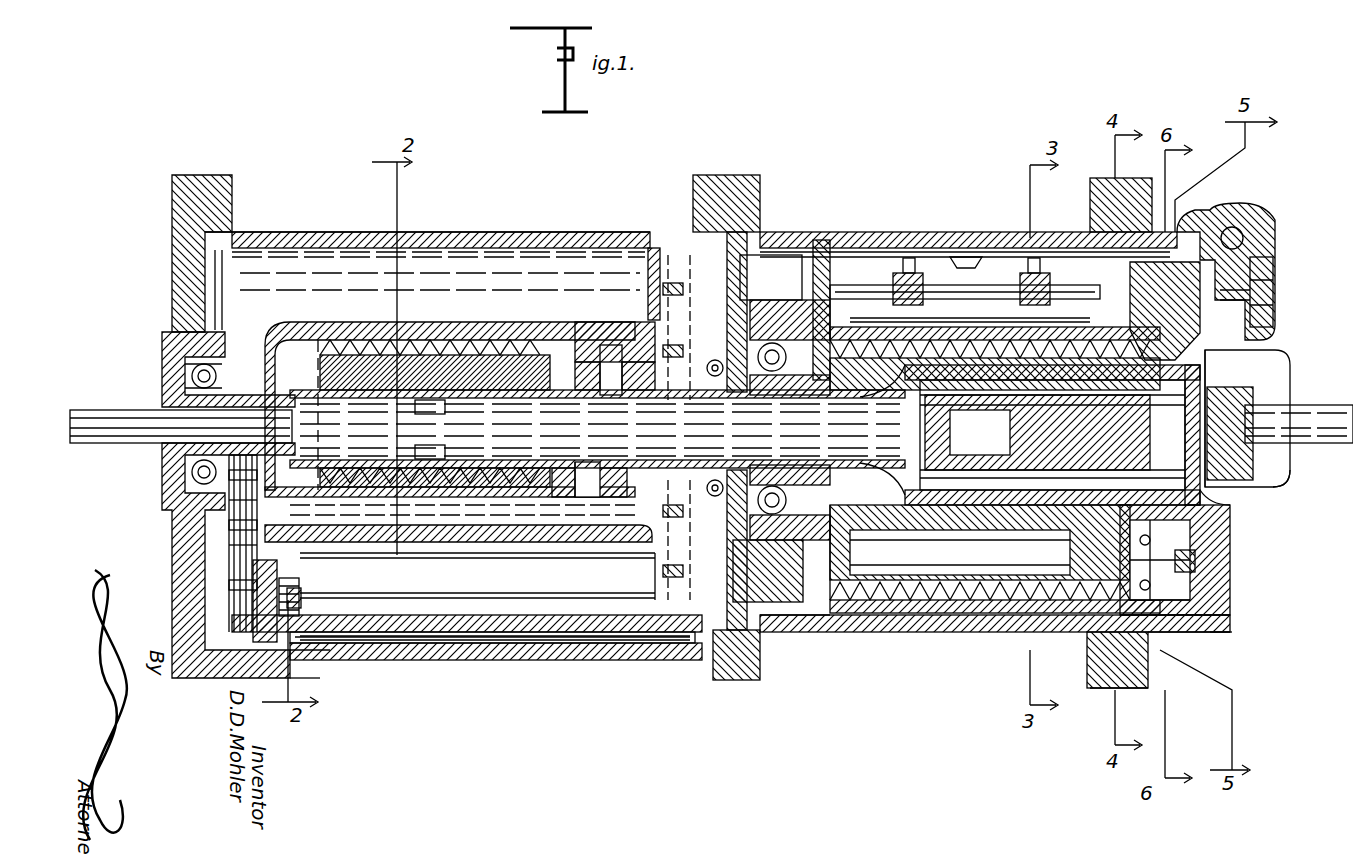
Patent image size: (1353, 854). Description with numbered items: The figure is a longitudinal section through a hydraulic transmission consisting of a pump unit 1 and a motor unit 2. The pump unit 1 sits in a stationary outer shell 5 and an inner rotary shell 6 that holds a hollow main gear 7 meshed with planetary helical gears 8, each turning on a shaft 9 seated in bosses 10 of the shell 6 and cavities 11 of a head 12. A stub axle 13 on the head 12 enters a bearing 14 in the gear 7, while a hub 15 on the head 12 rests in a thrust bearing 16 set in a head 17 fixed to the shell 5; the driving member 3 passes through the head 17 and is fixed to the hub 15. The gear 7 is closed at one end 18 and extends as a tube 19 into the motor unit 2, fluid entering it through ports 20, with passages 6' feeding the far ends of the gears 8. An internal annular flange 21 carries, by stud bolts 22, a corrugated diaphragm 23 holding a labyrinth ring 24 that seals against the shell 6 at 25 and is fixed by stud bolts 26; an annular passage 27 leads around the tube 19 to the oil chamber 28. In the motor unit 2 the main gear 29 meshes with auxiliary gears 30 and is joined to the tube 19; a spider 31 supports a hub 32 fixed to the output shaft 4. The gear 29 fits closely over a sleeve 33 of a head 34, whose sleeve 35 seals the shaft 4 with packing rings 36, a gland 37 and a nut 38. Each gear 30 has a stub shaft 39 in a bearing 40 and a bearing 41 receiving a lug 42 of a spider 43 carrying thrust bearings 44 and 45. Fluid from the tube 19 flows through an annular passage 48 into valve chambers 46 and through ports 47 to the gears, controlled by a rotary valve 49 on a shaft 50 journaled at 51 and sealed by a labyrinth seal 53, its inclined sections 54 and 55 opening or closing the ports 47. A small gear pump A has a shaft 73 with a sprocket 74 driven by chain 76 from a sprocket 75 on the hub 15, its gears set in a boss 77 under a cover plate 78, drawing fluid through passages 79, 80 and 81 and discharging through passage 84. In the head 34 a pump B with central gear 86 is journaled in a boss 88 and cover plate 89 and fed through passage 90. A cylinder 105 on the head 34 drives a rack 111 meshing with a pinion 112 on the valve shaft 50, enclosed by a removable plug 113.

The pump unit 1 is at (524, 236).
The motor unit 2 is at (888, 240).
The driving member 3 is at (150, 402).
The output shaft 4 is at (1299, 417).
The outer shell 5 is at (302, 240).
The inner rotary shell 6 is at (458, 548).
The passages 6' is at (465, 544).
The main gear 7 is at (515, 485).
The planetary helical gears 8 is at (455, 338).
The shaft 9 is at (630, 345).
The bosses 10 is at (585, 325).
The cavities 11 is at (275, 338).
The head 12 is at (250, 540).
The stub axle 13 is at (320, 345).
The bearing 14 is at (450, 504).
The hub 15 is at (250, 500).
The thrust bearing 16 is at (185, 485).
The head 17 is at (190, 300).
The closed end 18 is at (279, 588).
The tube 19 is at (605, 465).
The ports 20 is at (432, 420).
The internal annular flange 21 is at (655, 570).
The stud bolts 22 is at (725, 262).
The flexible corrugated diaphragm 23 is at (688, 327).
The labyrinth ring 24 is at (688, 334).
The sealing engagement 25 is at (655, 545).
The stud bolts 26 is at (705, 372).
The annular fluid passage 27 is at (685, 482).
The chamber 28 is at (705, 650).
The main gear 29 is at (1230, 497).
The auxiliary gears 30 is at (935, 615).
The spider 31 is at (830, 425).
The central hub 32 is at (880, 408).
The sleeve 33 is at (1052, 435).
The head 34 is at (1130, 670).
The sleeve 35 is at (1037, 432).
The packing rings 36 is at (1220, 385).
The gland 37 is at (1255, 395).
The nut 38 is at (1292, 485).
The stub shaft 39 is at (1230, 535).
The bearing 40 is at (1225, 515).
The bearing 41 is at (855, 615).
The bearing lug 42 is at (826, 618).
The spider 43 is at (780, 632).
The thrust bearing 44 is at (785, 325).
The thrust bearing 45 is at (730, 535).
The valve chamber 46 is at (862, 330).
The ports 47 is at (955, 335).
The annular passage 48 is at (905, 615).
The rotary valve 49 is at (975, 258).
The shaft 50 is at (912, 262).
The journal 51 is at (828, 245).
The labyrinth seal 53 is at (1196, 262).
The inclined section 54 is at (965, 299).
The inclined section 55 is at (1030, 300).
The extended shaft 73 is at (279, 590).
The sprocket 74 is at (233, 600).
The sprocket 75 is at (250, 365).
The chain 76 is at (255, 506).
The boss 77 is at (345, 598).
The cover plate 78 is at (255, 544).
The passage 79 is at (640, 645).
The passage 80 is at (500, 645).
The passage 81 is at (327, 669).
The passage 84 is at (284, 681).
The central gear 86 is at (1205, 560).
The boss 88 is at (1230, 600).
The cover plate 89 is at (1200, 625).
The passage 90 is at (1225, 640).
The cylinder 105 is at (1230, 195).
The rack 111 is at (1262, 222).
The pinion 112 is at (1273, 296).
The removable plug 113 is at (1273, 272).